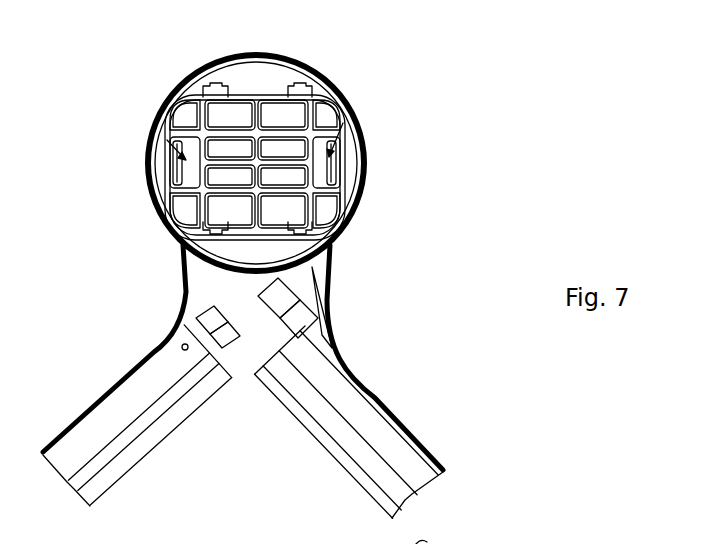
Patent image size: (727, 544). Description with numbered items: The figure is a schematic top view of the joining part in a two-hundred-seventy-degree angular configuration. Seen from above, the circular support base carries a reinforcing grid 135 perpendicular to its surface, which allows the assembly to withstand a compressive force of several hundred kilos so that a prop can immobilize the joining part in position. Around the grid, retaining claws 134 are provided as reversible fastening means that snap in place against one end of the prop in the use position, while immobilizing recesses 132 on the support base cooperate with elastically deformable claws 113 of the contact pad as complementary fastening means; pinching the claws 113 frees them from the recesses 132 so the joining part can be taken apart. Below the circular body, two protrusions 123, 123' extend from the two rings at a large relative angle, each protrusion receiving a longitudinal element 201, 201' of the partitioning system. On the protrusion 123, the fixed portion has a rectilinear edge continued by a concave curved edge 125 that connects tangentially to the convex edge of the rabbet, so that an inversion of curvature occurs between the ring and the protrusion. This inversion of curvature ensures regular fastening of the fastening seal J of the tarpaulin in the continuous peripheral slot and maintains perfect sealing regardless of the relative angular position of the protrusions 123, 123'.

The retaining claws 134 is at (297, 218).
The immobilizing recesses 132 is at (167, 140).
The elastically deformable claws 113 is at (178, 167).
The reinforcing grid 135 is at (282, 130).
The protrusion 123 is at (287, 280).
The protrusion 123' is at (166, 309).
The concave curved edge 125 is at (328, 318).
The tube 201 is at (315, 398).
The tube 201' is at (137, 421).
The fastening seal J is at (297, 63).